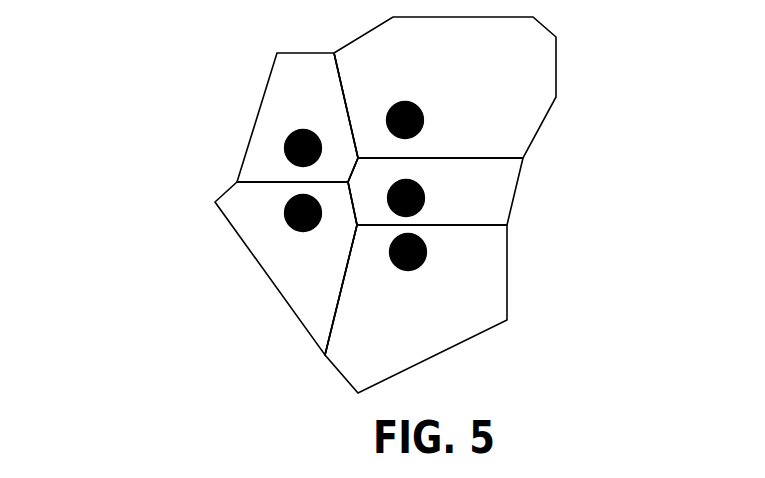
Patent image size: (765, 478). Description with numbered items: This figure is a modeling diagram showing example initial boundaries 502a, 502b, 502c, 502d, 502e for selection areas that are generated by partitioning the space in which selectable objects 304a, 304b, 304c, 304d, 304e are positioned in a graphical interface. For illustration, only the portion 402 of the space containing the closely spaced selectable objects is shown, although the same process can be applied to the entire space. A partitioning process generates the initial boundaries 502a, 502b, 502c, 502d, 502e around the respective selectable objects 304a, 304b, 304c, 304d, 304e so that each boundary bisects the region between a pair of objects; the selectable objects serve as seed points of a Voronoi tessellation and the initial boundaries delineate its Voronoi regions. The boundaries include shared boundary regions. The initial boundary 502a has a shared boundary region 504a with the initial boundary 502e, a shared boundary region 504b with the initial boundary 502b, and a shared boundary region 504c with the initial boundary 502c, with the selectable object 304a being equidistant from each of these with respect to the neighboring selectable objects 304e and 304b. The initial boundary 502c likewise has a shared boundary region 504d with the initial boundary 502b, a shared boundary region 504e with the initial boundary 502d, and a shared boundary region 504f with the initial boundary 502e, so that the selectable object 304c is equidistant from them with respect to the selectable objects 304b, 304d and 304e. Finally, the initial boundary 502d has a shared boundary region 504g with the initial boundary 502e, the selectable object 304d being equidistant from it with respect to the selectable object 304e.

The portion of the electronic content 402 is at (348, 205).
The initial boundary 502a is at (268, 65).
The initial boundary 502b is at (562, 52).
The initial boundary 502c is at (522, 182).
The initial boundary 502d is at (513, 308).
The initial boundary 502e is at (220, 195).
The shared boundary region 504a is at (257, 177).
The shared boundary region 504b is at (358, 138).
The shared boundary region 504c is at (355, 173).
The shared boundary region 504d is at (445, 153).
The shared boundary region 504e is at (437, 230).
The shared boundary region 504f is at (348, 208).
The shared boundary region 504g is at (343, 297).
The selectable object 304a is at (320, 140).
The selectable object 304b is at (417, 98).
The selectable object 304c is at (427, 190).
The selectable object 304d is at (410, 273).
The selectable object 304e is at (287, 202).